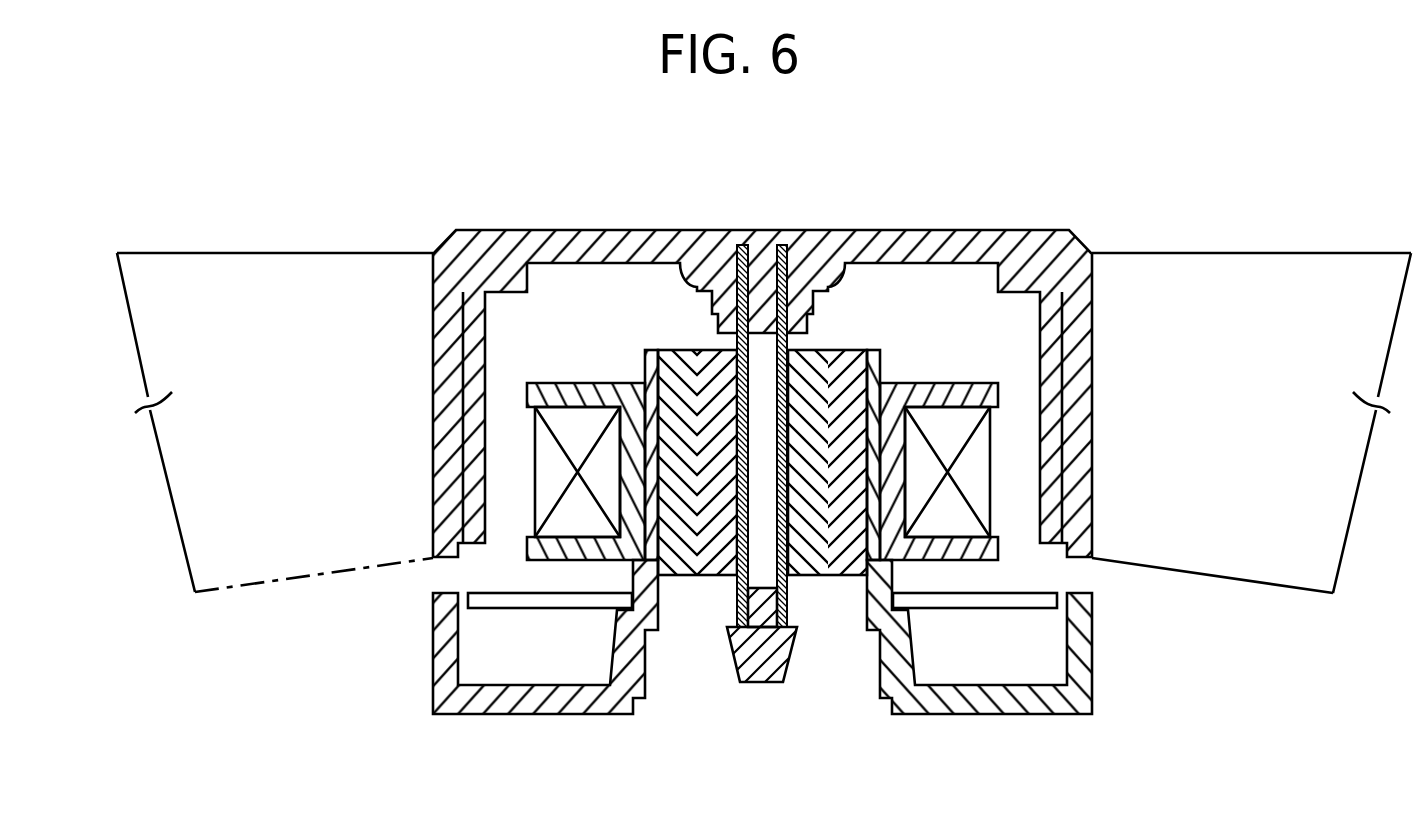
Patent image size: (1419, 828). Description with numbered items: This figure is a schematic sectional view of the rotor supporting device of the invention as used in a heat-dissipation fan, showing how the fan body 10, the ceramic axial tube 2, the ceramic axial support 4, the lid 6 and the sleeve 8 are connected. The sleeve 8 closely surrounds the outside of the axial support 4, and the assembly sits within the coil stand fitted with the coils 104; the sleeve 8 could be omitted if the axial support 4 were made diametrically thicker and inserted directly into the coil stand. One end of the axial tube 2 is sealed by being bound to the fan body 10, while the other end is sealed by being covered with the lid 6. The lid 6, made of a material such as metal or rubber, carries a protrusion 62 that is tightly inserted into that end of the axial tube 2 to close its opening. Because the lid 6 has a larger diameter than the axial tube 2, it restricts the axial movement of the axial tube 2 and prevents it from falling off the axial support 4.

The ceramic axial tube 2 is at (782, 245).
The ceramic axial support 4 is at (820, 348).
The lid 6 is at (783, 665).
The sleeve 8 is at (675, 348).
The fan body 10 is at (940, 230).
The protrusion 62 is at (762, 610).
The coils 104 is at (578, 425).